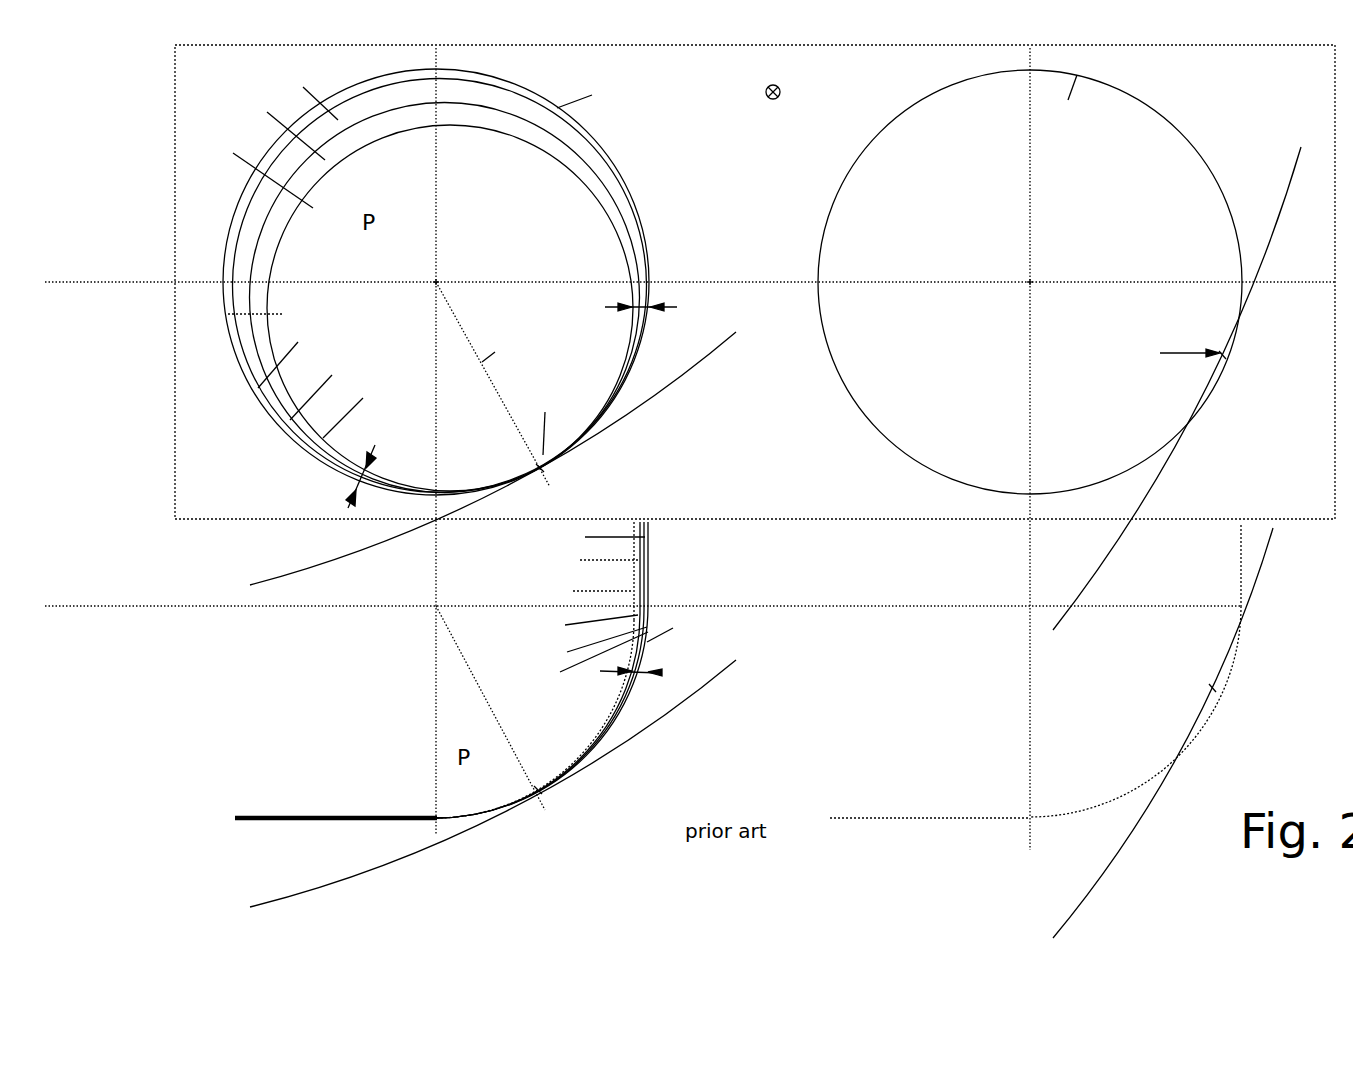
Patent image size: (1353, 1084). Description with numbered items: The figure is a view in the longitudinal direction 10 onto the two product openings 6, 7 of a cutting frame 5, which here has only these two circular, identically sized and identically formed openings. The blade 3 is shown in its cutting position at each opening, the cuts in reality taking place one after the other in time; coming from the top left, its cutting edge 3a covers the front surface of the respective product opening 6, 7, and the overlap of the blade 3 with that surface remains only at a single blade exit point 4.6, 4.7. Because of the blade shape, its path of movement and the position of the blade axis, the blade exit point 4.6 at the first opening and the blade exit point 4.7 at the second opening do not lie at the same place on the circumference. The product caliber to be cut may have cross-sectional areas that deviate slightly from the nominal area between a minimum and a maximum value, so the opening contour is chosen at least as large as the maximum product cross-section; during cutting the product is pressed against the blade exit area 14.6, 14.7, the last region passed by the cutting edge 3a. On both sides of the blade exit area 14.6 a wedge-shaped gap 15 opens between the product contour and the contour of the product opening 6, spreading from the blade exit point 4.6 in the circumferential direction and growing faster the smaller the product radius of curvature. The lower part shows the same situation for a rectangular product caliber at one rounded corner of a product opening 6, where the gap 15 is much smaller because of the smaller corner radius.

The blade 3 is at (780, 539).
The cutting edge 3a is at (688, 370).
The blade exit point 4.6 is at (543, 649).
The blade exit point 4.7 is at (1226, 362).
The cutting frame 5 is at (667, 46).
The product opening 6 is at (446, 73).
The product opening 7 is at (1135, 120).
The longitudinal direction 10 is at (781, 92).
The blade exit area 14.6 is at (549, 423).
The blade exit area 14.7 is at (1164, 354).
The wedge-shaped gap 15 is at (672, 307).